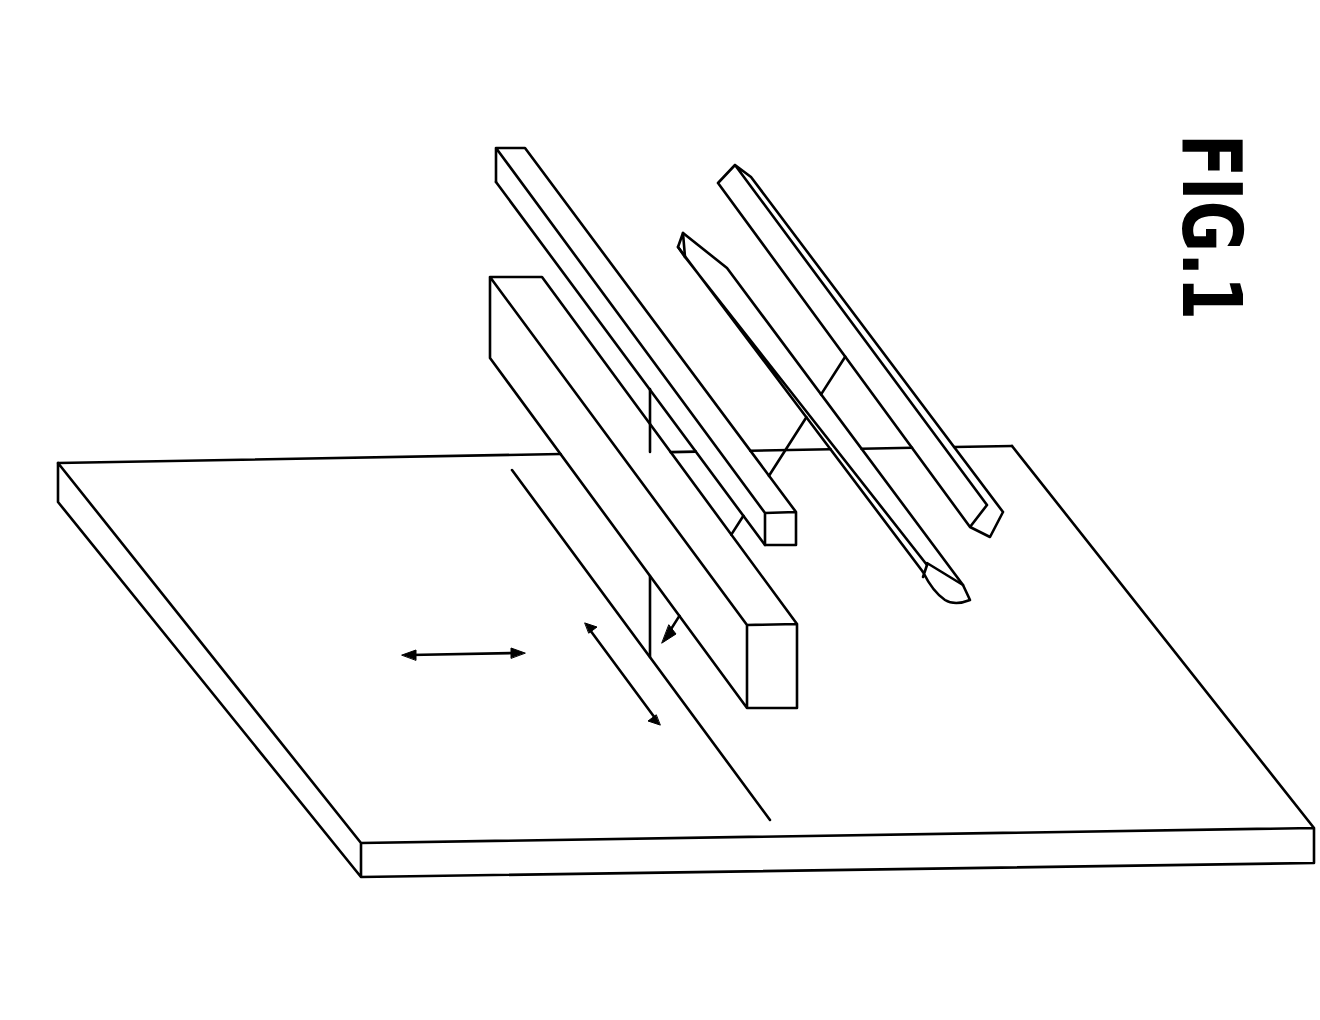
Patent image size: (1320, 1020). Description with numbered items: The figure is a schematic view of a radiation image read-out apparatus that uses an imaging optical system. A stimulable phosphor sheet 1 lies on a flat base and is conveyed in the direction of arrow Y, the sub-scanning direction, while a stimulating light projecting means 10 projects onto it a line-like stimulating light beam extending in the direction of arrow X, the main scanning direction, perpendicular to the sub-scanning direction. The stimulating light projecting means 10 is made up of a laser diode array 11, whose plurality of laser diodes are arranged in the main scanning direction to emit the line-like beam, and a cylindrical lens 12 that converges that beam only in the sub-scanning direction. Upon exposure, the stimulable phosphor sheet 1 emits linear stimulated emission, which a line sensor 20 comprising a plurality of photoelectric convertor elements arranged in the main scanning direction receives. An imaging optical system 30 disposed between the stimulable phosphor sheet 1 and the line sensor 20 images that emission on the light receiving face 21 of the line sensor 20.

The stimulable phosphor sheet 1 is at (1099, 607).
The stimulating light projecting means 10 is at (796, 69).
The laser diode array 11 is at (751, 178).
The cylindrical lens 12 is at (722, 267).
The line sensor 20 is at (628, 306).
The light receiving face 21 is at (510, 206).
The imaging optical system 30 is at (500, 316).